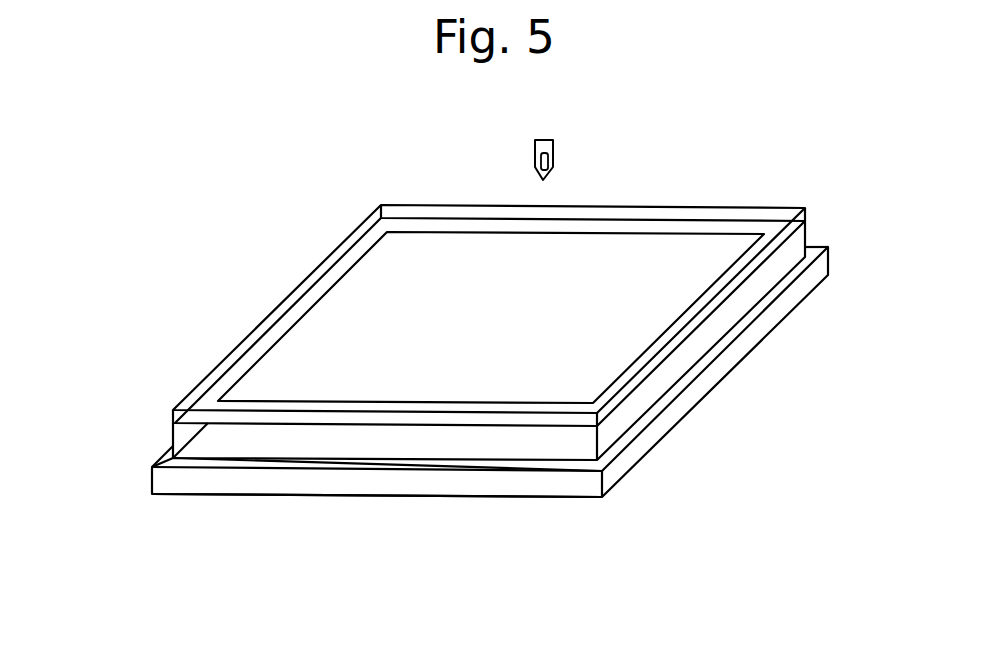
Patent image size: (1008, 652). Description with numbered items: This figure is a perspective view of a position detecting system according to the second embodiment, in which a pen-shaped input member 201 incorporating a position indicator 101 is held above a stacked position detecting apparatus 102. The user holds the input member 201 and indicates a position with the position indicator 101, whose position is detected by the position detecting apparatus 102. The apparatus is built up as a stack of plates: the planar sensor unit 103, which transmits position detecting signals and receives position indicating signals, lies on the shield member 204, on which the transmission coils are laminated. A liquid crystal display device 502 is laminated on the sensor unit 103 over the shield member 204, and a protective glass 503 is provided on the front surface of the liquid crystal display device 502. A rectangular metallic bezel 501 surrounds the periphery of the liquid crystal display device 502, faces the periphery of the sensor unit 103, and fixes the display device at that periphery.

The position indicator 101 is at (548, 172).
The pen-shaped input member 201 is at (555, 145).
The position detecting apparatus 102 is at (284, 582).
The sensor unit 103 is at (152, 478).
The shield member 204 is at (375, 498).
The metallic bezel 501 is at (212, 450).
The liquid crystal display device 502 is at (313, 323).
The protective glass 503 is at (352, 248).